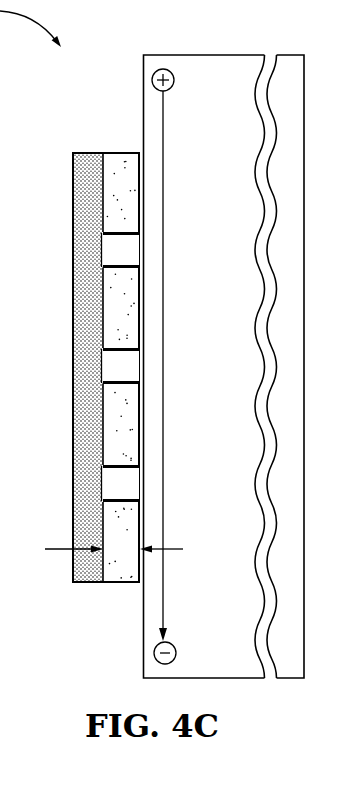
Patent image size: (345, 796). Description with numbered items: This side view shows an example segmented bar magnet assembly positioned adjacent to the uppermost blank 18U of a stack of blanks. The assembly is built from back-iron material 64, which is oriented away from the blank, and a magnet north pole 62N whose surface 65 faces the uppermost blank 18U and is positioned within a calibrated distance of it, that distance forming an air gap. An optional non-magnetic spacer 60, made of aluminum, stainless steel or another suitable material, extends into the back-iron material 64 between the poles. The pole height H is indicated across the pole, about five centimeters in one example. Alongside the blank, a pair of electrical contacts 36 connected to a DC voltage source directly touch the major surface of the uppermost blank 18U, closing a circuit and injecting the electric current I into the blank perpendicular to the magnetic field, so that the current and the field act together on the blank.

The uppermost blank 18U is at (222, 372).
The electrical contacts 36 is at (171, 72).
The non-magnetic spacer 60 is at (101, 482).
The magnet north pole 62N is at (122, 157).
The back-iron material 64 is at (90, 157).
The surface of the north and south poles 65 is at (140, 152).
The pole height H is at (67, 549).
The electric current I is at (163, 320).